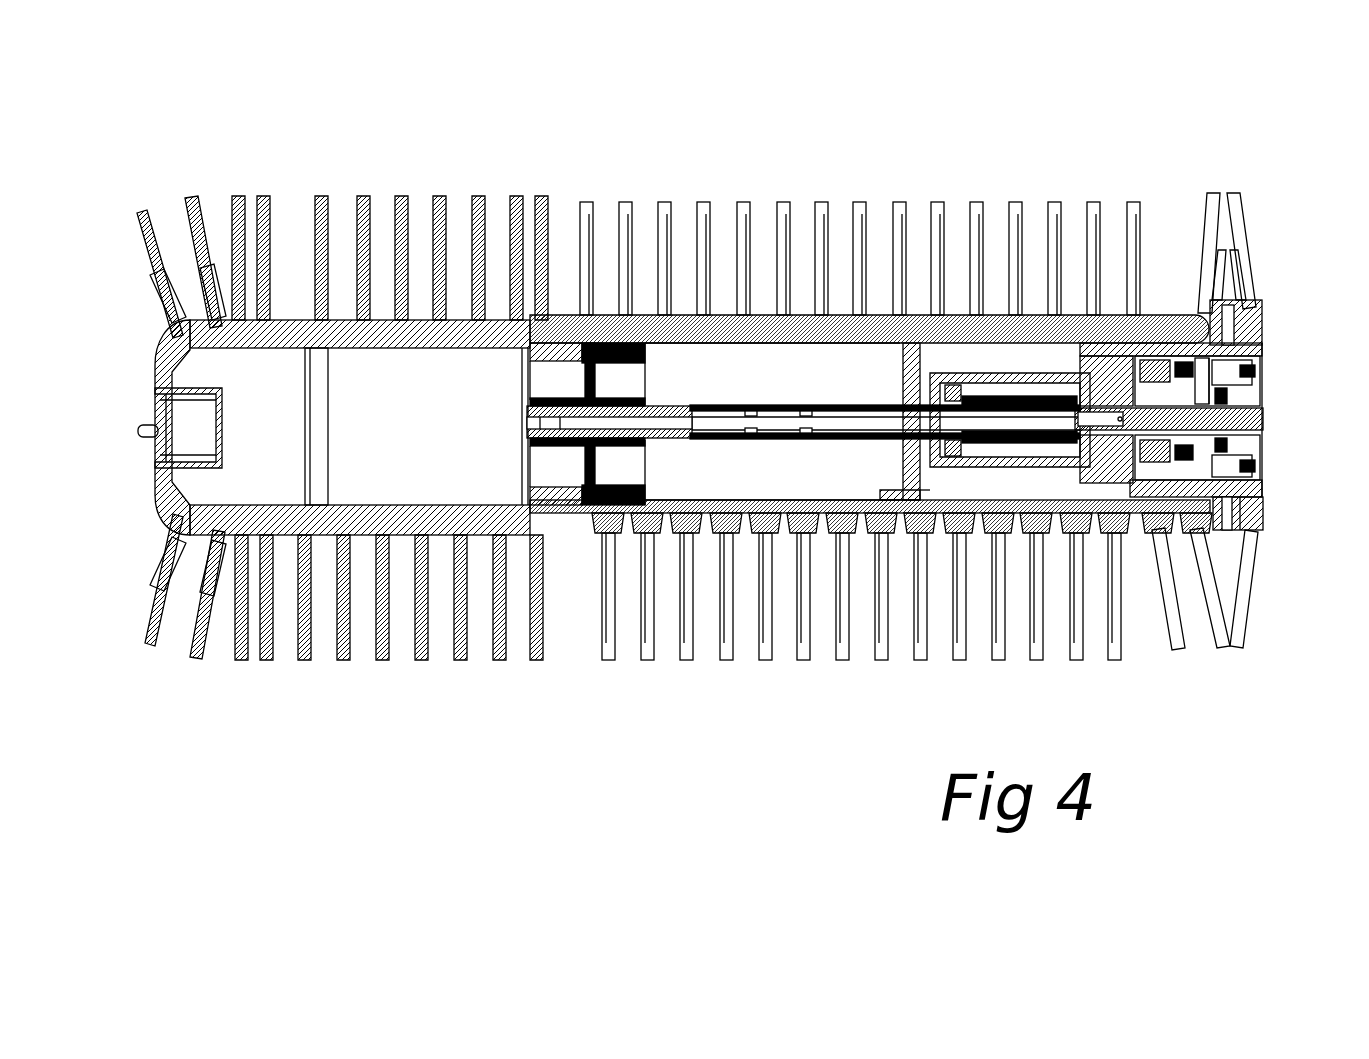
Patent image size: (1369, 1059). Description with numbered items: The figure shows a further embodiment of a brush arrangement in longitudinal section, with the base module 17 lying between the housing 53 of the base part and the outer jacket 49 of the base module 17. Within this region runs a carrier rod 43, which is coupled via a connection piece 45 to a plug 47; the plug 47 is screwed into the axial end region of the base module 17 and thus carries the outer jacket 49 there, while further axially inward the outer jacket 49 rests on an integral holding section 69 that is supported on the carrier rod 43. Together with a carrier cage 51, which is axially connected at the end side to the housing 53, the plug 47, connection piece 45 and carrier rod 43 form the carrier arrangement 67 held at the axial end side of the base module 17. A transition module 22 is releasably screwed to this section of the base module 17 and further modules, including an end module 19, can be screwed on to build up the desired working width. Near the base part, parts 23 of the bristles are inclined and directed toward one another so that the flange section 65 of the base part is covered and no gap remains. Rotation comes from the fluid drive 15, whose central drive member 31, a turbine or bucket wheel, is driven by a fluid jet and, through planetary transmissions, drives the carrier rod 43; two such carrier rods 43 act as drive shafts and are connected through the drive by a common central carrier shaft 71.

The fluid drive 15 is at (1300, 437).
The base module 17 is at (898, 122).
The end module 19 is at (213, 128).
The transition module 22 is at (420, 120).
The parts of the bristles 23 is at (1211, 170).
The central drive member 31 is at (1235, 378).
The carrier rod 43 is at (770, 446).
The connection piece 45 is at (640, 450).
The plug 47 is at (626, 352).
The outer jacket 49 is at (822, 350).
The carrier cage 51 is at (985, 376).
The housing 53 is at (1165, 340).
The flange section 65 is at (1210, 525).
The carrier arrangement 67 is at (780, 362).
The integral holding section 69 is at (912, 462).
The central carrier shaft 71 is at (1262, 442).